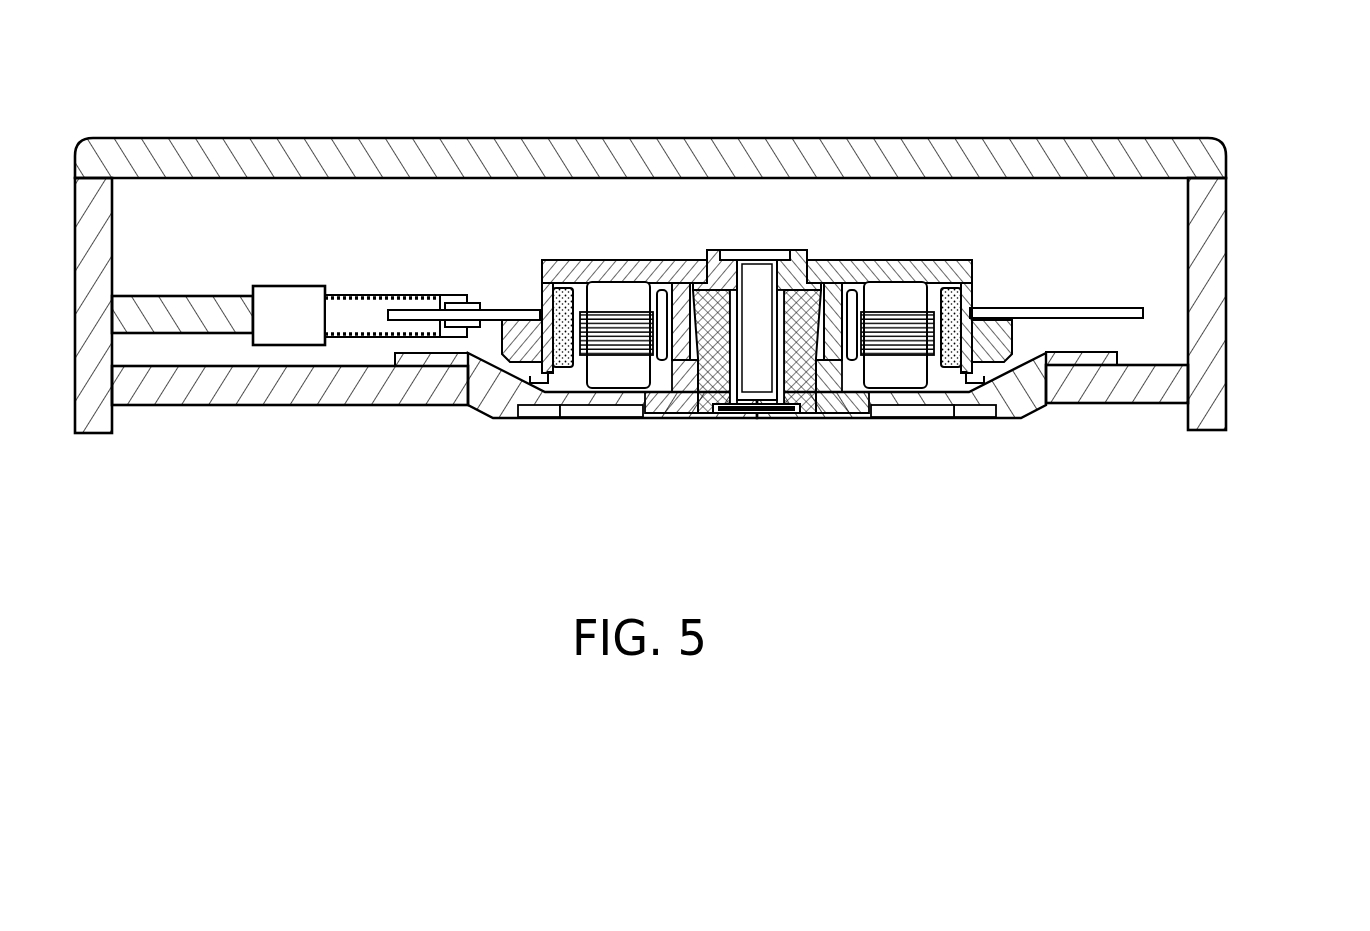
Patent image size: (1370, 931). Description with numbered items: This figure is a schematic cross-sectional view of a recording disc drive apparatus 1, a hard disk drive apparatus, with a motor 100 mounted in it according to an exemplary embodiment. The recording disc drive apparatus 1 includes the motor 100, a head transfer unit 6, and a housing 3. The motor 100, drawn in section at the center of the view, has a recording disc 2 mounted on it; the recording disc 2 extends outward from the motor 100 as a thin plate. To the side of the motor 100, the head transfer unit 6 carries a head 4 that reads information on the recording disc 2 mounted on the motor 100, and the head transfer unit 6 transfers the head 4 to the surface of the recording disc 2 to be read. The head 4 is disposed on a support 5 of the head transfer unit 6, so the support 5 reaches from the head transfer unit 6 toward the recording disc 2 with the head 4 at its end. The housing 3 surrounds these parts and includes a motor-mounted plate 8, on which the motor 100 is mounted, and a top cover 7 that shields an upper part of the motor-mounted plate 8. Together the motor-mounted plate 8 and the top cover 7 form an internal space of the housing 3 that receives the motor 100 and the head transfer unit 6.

The recording disc drive apparatus 1 is at (868, 64).
The recording disc 2 is at (1075, 318).
The housing 3 is at (1255, 202).
The head 4 is at (453, 330).
The support 5 is at (355, 338).
The head transfer unit 6 is at (288, 335).
The top cover 7 is at (405, 160).
The motor-mounted plate 8 is at (1212, 425).
The motor 100 is at (783, 450).